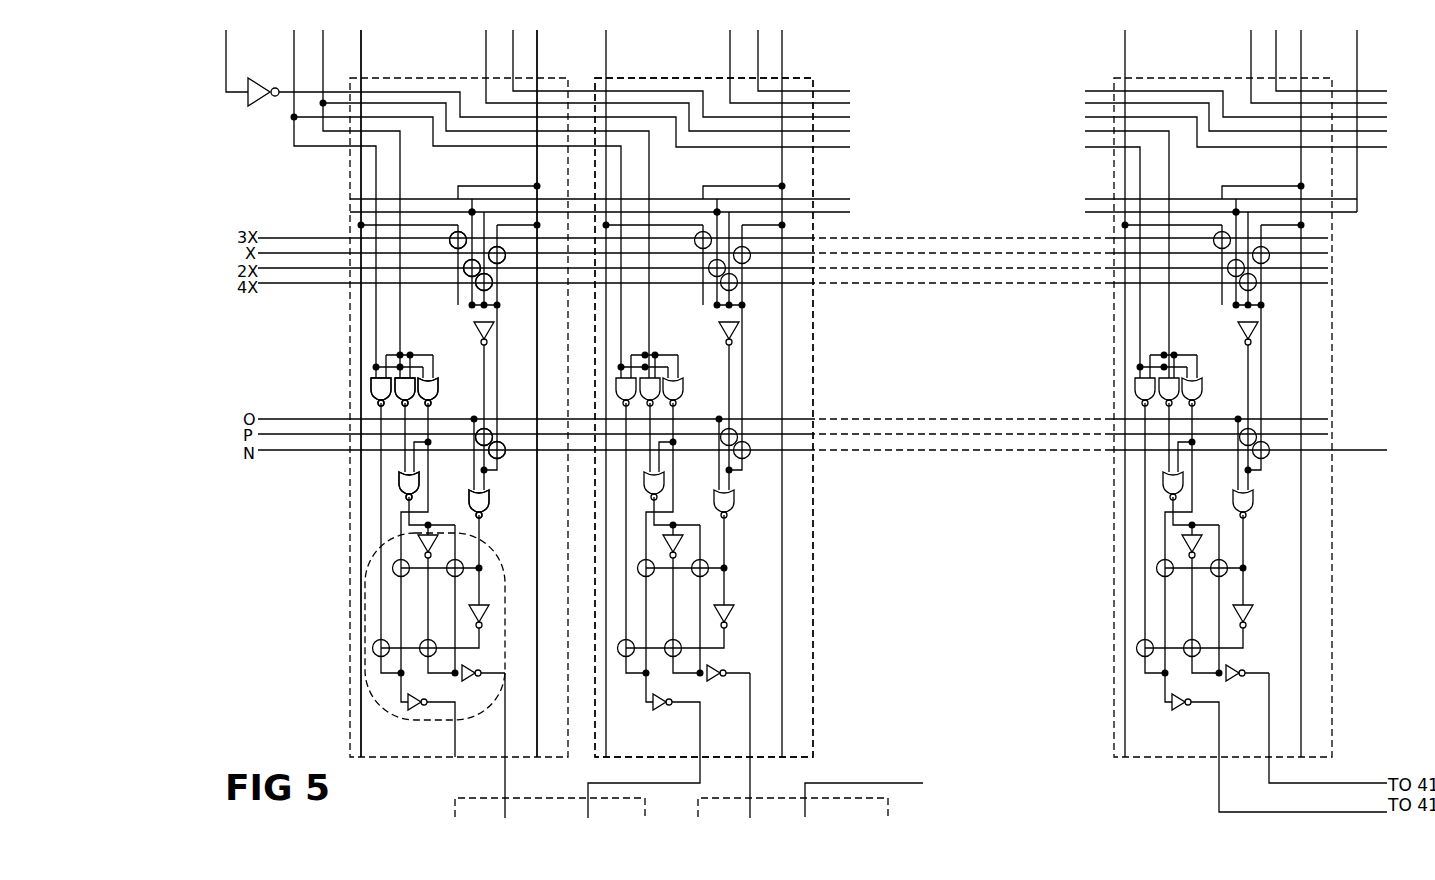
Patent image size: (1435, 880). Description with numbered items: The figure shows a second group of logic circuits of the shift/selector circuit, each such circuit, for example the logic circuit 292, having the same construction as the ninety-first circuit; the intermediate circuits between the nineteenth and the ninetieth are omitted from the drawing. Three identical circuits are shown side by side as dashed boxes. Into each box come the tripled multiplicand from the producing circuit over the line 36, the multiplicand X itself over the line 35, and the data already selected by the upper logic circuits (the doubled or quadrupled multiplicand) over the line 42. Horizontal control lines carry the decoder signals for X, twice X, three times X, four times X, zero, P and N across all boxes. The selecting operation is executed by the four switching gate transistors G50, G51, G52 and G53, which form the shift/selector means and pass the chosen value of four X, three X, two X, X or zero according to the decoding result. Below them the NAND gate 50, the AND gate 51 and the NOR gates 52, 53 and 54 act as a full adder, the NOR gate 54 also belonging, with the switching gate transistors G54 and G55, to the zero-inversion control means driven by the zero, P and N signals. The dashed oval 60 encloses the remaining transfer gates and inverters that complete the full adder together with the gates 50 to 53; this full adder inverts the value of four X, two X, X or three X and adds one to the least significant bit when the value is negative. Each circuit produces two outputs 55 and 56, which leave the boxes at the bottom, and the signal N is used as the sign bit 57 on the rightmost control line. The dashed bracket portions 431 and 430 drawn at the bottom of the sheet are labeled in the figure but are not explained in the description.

The line 36 is at (363, 66).
The line 42 is at (513, 66).
The line 35 is at (540, 62).
The logic circuit 292 is at (660, 78).
The output bus portion 431 is at (452, 812).
The output bus portion 430 is at (895, 803).
The output 55 is at (505, 773).
The output 56 is at (700, 778).
The sign bit 57 is at (1353, 449).
The full adder circuit portion 60 is at (400, 713).
The NAND gate 50 is at (372, 388).
The AND gate 51 is at (415, 400).
The NOR gate 52 is at (437, 383).
The NOR gate 53 is at (399, 490).
The NOR gate 54 is at (487, 505).
The switching gate transistor G50 is at (455, 250).
The switching gate transistor G51 is at (470, 278).
The switching gate transistor G52 is at (492, 291).
The switching gate transistor G53 is at (500, 265).
The switching gate transistor G54 is at (490, 430).
The switching gate transistor G55 is at (500, 457).